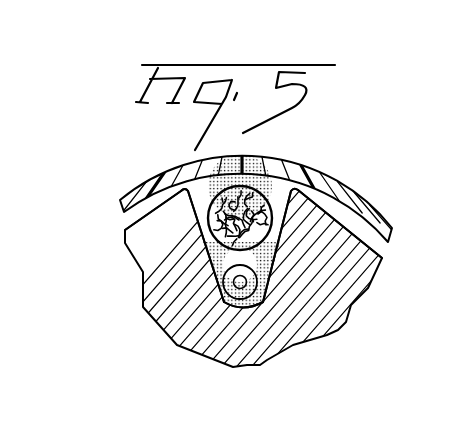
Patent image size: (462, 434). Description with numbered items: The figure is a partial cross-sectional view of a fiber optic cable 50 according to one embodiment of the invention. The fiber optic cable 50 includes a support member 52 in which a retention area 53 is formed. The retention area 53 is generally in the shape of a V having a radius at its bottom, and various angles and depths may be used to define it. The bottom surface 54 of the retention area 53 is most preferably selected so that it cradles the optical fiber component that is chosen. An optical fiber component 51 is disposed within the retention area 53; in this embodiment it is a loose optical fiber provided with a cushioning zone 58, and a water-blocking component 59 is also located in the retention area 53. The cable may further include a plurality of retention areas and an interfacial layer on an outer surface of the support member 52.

The fiber optic cable 50 is at (432, 157).
The optical fiber component 51 is at (228, 290).
The support member 52 is at (162, 282).
The retention area 53 is at (196, 198).
The bottom surface 54 is at (263, 293).
The cushioning zone 58 is at (260, 265).
The water-blocking component 59 is at (253, 203).